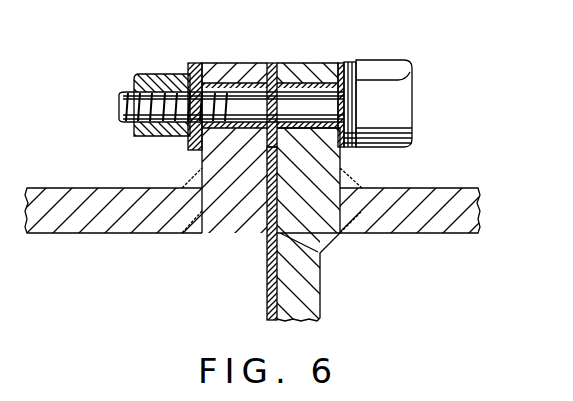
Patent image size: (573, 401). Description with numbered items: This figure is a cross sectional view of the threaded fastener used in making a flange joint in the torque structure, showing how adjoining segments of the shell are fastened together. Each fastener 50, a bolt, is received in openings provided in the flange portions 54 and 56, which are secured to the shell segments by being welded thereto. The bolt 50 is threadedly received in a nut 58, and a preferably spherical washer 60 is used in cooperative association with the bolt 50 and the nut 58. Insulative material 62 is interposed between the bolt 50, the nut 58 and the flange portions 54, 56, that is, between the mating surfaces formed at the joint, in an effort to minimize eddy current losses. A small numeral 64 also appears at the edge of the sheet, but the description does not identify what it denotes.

The fastener 50 is at (414, 67).
The flange portion 54 is at (253, 63).
The flange portion 56 is at (312, 63).
The nut 58 is at (157, 74).
The spherical washer 60 is at (350, 148).
The insulative material 62 is at (196, 63).
The reference numeral fragment 64 is at (3, 388).